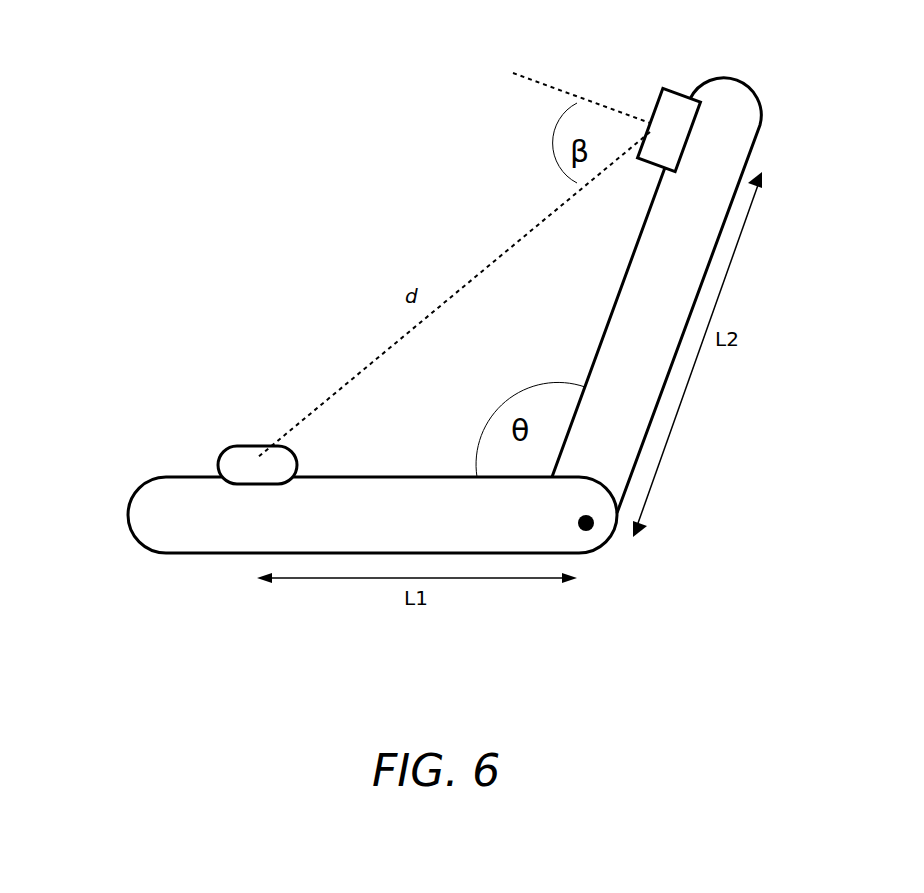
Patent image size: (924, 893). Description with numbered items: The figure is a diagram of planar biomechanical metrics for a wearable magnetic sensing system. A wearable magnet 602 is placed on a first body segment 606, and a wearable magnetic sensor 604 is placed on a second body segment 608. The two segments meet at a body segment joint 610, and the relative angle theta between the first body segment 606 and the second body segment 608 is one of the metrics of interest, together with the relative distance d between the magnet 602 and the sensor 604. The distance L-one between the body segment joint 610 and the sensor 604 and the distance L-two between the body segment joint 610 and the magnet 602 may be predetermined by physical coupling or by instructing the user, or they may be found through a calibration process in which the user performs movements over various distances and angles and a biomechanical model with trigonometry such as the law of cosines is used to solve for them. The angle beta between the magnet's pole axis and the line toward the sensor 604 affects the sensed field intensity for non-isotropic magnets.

The wearable magnet 602 is at (678, 103).
The wearable magnetic sensor 604 is at (240, 446).
The first body segment 606 is at (755, 152).
The second body segment 608 is at (137, 485).
The body segment joint 610 is at (593, 532).